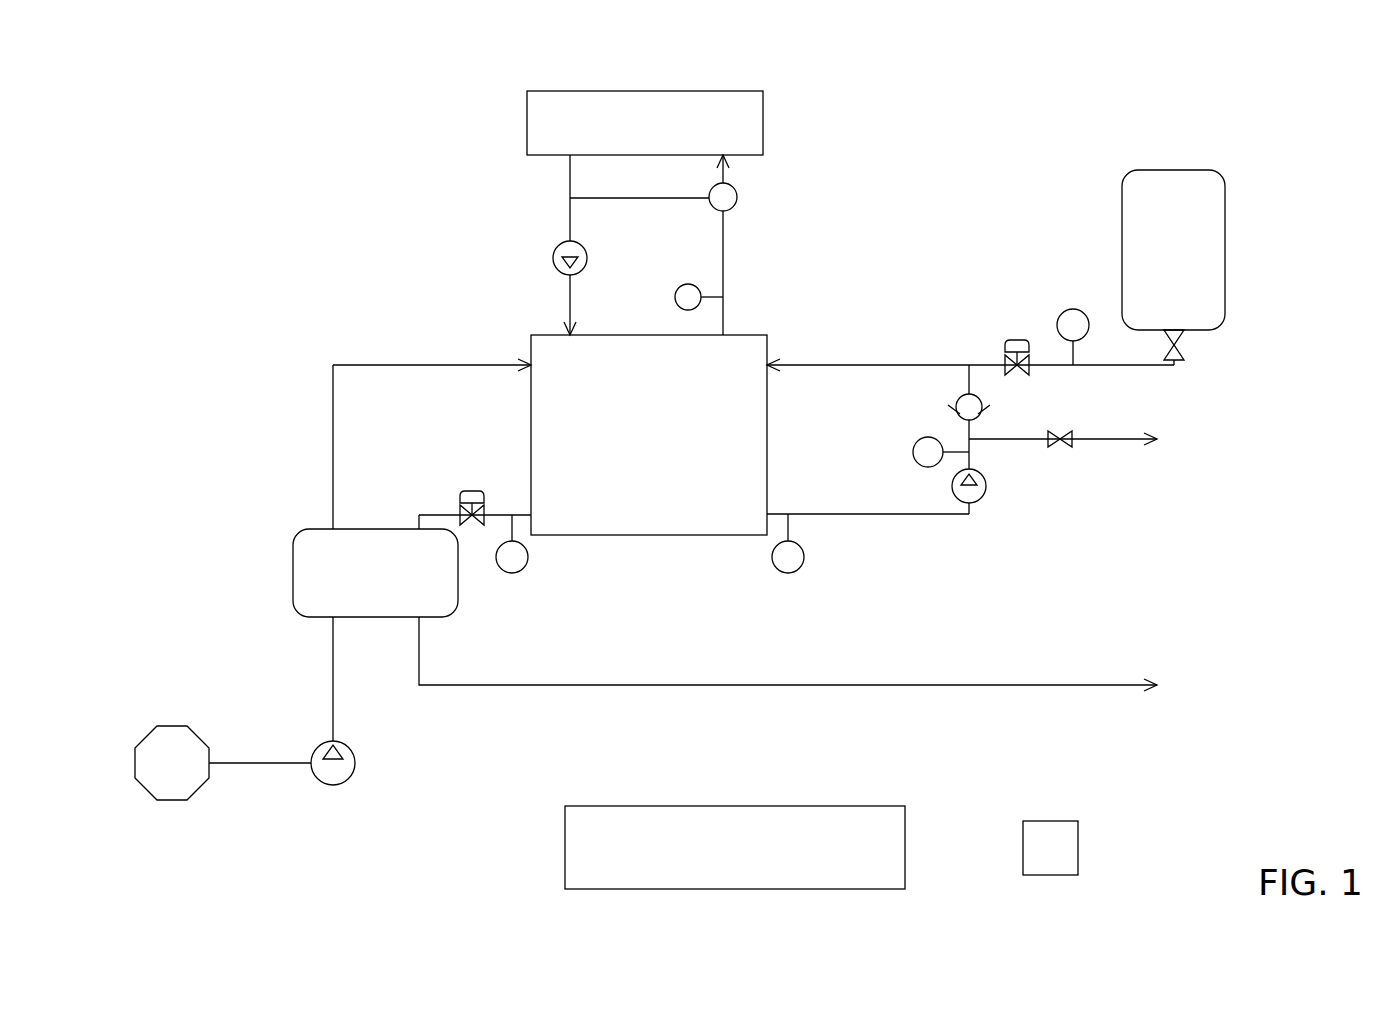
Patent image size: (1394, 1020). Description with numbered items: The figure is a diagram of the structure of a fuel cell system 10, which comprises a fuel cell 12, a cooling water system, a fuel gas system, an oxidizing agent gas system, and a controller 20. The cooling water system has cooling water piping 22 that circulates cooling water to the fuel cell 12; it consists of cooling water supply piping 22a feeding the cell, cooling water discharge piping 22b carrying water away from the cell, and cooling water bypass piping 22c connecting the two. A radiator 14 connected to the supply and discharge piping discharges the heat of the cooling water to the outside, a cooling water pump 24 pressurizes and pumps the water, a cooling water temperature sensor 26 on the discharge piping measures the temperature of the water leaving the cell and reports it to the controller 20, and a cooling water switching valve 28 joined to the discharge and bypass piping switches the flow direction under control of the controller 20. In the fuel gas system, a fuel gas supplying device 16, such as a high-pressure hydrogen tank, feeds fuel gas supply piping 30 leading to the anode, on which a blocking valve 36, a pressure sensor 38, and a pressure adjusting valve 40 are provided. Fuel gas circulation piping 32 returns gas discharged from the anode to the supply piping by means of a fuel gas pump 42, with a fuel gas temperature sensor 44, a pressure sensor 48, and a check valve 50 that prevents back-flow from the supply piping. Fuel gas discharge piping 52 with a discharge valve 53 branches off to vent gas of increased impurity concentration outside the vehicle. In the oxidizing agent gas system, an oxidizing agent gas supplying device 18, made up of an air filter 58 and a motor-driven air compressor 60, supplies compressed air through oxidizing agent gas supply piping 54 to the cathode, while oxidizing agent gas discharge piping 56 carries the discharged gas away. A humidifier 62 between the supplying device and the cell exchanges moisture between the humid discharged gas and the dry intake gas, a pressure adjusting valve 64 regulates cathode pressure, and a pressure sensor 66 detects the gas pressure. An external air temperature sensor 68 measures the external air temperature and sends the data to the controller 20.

The fuel cell system 10 is at (348, 207).
The fuel cell 12 is at (748, 336).
The radiator 14 is at (705, 91).
The fuel gas supplying device 16 is at (1174, 170).
The oxidizing agent gas supplying device 18 is at (290, 737).
The controller 20 is at (788, 806).
The cooling water piping 22 is at (646, 245).
The cooling water supply piping 22a is at (571, 208).
The cooling water discharge piping 22b is at (723, 208).
The cooling water bypass piping 22c is at (585, 240).
The cooling water pump 24 is at (554, 253).
The cooling water temperature sensor 26 is at (675, 300).
The cooling water switching valve 28 is at (737, 190).
The fuel gas supply piping 30 is at (846, 365).
The fuel gas circulation piping 32 is at (942, 515).
The blocking valve 36 is at (1186, 350).
The pressure sensor 38 is at (1073, 309).
The pressure adjusting valve for fuel gas 40 is at (1015, 340).
The fuel gas pump 42 is at (980, 497).
The fuel gas temperature sensor 44 is at (913, 452).
The pressure sensor 48 is at (795, 572).
The check valve 50 is at (958, 398).
The fuel gas discharge piping 52 is at (1005, 440).
The discharge valve 53 is at (1065, 447).
The oxidizing agent gas supply piping 54 is at (332, 675).
The oxidizing agent gas discharge piping 56 is at (425, 642).
The air filter 58 is at (167, 727).
The air compressor 60 is at (386, 763).
The humidifier 62 is at (293, 550).
The pressure adjusting valve for oxidizing agent gas 64 is at (475, 526).
The pressure sensor 66 is at (529, 559).
The external air temperature sensor 68 is at (1078, 836).